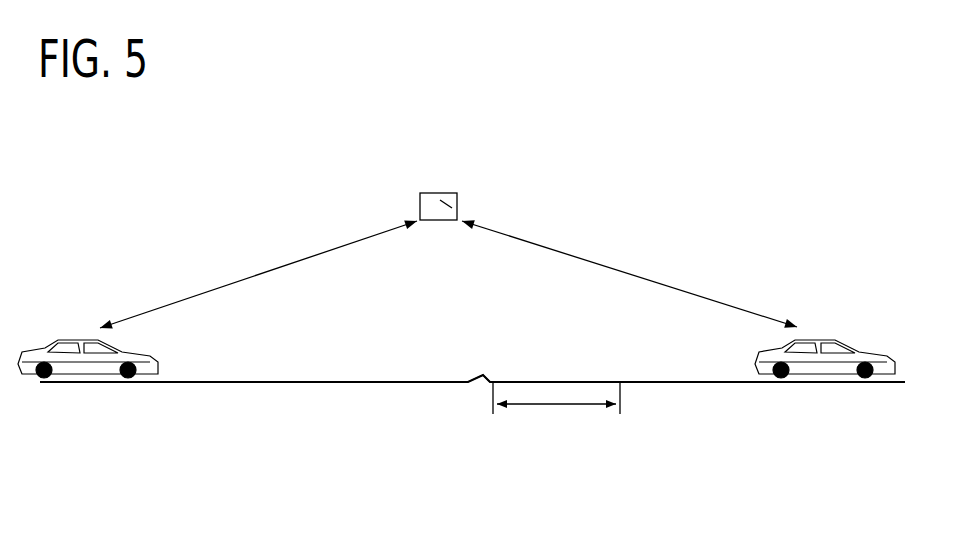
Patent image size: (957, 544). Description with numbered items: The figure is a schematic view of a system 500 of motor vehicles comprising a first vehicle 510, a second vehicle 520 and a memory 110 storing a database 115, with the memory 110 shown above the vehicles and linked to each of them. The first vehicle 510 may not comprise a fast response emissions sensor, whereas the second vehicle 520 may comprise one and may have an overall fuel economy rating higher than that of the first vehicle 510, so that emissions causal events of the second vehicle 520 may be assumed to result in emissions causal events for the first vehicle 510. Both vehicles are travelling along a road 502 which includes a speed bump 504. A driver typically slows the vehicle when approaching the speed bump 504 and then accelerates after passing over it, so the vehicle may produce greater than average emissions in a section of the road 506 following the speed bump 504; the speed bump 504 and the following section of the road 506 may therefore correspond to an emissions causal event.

The system 500 is at (606, 136).
The road 502 is at (363, 384).
The speed bump 504 is at (483, 372).
The section of the road 506 is at (562, 405).
The memory 110 is at (440, 192).
The database 115 is at (447, 207).
The first vehicle 510 is at (73, 337).
The second vehicle 520 is at (808, 337).